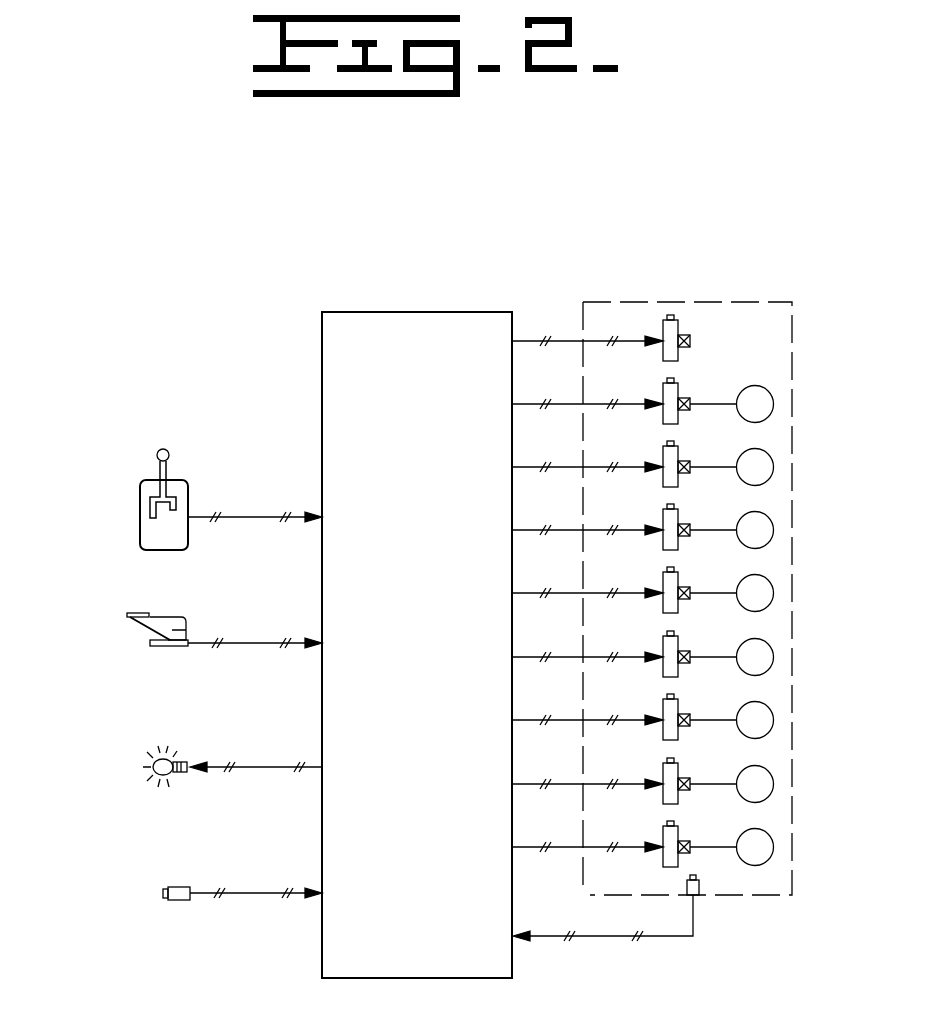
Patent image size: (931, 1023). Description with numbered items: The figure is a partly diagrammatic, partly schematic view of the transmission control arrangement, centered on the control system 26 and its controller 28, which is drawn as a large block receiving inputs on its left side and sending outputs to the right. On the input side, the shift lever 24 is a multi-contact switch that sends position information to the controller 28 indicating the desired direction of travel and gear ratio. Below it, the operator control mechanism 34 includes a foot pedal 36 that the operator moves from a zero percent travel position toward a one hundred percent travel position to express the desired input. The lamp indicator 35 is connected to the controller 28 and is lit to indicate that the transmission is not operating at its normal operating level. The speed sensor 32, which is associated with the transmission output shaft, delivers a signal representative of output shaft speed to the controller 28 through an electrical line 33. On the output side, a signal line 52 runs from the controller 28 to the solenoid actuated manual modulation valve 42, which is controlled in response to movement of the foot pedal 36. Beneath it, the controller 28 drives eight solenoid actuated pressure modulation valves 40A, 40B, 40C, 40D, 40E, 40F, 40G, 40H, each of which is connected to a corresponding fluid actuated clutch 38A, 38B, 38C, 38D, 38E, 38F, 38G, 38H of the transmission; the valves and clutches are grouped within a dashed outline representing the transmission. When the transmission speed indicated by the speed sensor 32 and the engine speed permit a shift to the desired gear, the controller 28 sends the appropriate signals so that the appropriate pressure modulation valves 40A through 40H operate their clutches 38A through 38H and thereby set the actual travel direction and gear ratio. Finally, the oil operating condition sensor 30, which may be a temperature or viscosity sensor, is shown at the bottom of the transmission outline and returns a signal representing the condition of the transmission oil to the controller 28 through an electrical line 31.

The control system 26 is at (235, 322).
The controller 28 is at (428, 463).
The shift lever 24 is at (140, 500).
The operator control mechanism 34 is at (105, 596).
The foot pedal 36 is at (150, 627).
The lamp indicator 35 is at (158, 774).
The speed sensor 32 is at (168, 898).
The electrical line 33 is at (257, 893).
The signal line 52 is at (552, 340).
The manual modulation valve 42 is at (678, 323).
The pressure modulation valve 40A is at (663, 391).
The pressure modulation valve 40B is at (663, 454).
The pressure modulation valve 40C is at (663, 517).
The pressure modulation valve 40D is at (663, 580).
The pressure modulation valve 40E is at (663, 644).
The pressure modulation valve 40F is at (663, 707).
The pressure modulation valve 40G is at (663, 771).
The pressure modulation valve 40H is at (663, 834).
The fluid actuated clutch 38A is at (774, 404).
The fluid actuated clutch 38B is at (774, 467).
The fluid actuated clutch 38C is at (774, 530).
The fluid actuated clutch 38D is at (774, 593).
The fluid actuated clutch 38E is at (774, 657).
The fluid actuated clutch 38F is at (774, 720).
The fluid actuated clutch 38G is at (774, 784).
The fluid actuated clutch 38H is at (774, 847).
The oil operating condition sensor 30 is at (700, 892).
The electrical line 31 is at (655, 937).